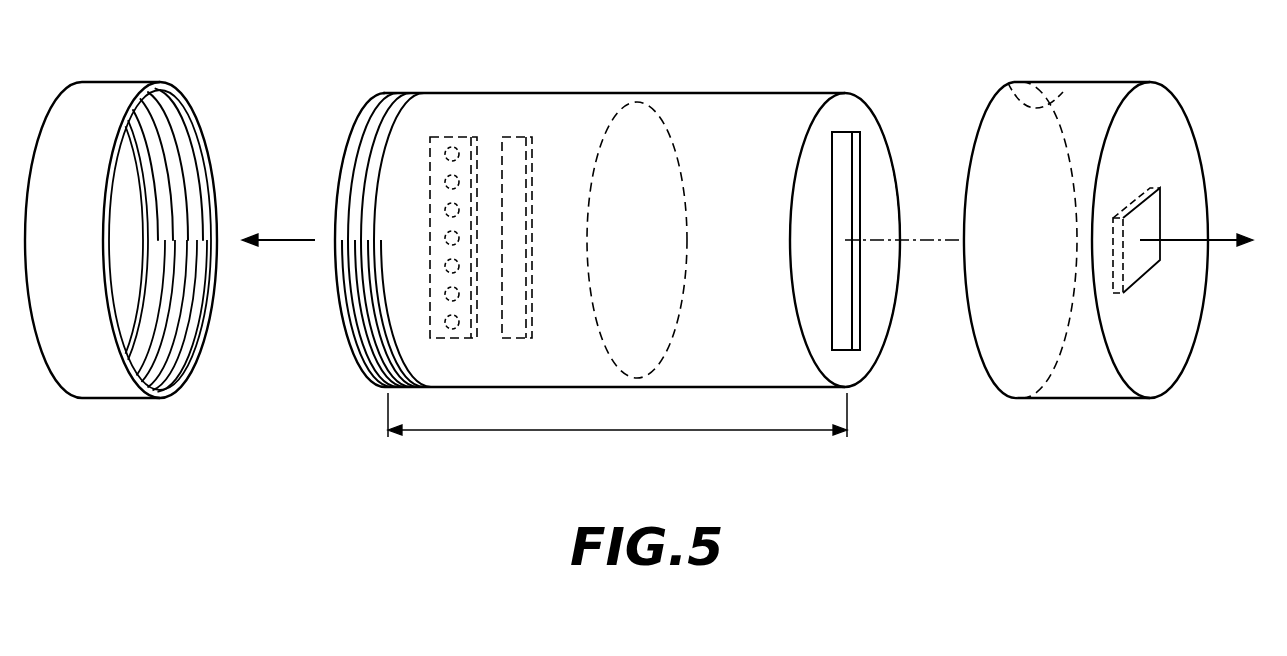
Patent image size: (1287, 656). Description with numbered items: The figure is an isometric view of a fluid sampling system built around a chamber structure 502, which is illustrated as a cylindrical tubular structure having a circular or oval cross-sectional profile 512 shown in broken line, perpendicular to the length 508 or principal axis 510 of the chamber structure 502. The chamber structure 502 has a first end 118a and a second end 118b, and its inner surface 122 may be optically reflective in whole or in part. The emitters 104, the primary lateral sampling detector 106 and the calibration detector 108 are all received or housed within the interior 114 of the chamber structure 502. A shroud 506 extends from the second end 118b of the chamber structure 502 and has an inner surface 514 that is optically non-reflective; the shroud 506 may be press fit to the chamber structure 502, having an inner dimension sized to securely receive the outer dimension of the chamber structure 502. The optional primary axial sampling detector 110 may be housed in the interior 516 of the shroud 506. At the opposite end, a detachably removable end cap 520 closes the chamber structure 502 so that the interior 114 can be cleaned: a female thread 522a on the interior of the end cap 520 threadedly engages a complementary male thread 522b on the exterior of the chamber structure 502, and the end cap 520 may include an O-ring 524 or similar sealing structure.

The chamber structure 502 is at (770, 93).
The emitters 104 is at (456, 142).
The calibration detector 108 is at (521, 137).
The cross-sectional profile 512 is at (664, 116).
The primary lateral sampling detector 106 is at (848, 132).
The inner surface 122 is at (877, 160).
The interior 114 is at (704, 238).
The primary axial sampling detector 110 is at (1145, 240).
The first end 118a is at (373, 79).
The second end 118b is at (861, 395).
The shroud 506 is at (1089, 82).
The inner surface 514 is at (1010, 83).
The interior 516 is at (1058, 266).
The end cap 520 is at (103, 372).
The thread 522a is at (173, 320).
The thread 522b is at (376, 358).
The O-ring 524 is at (140, 182).
The principal axis 510 is at (288, 240).
The length 508 is at (616, 432).